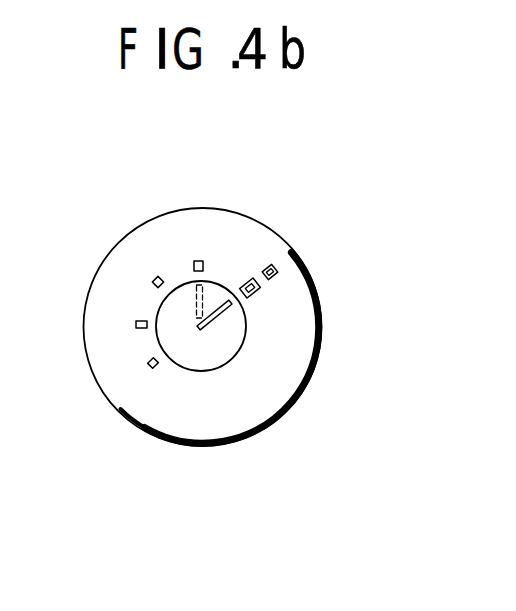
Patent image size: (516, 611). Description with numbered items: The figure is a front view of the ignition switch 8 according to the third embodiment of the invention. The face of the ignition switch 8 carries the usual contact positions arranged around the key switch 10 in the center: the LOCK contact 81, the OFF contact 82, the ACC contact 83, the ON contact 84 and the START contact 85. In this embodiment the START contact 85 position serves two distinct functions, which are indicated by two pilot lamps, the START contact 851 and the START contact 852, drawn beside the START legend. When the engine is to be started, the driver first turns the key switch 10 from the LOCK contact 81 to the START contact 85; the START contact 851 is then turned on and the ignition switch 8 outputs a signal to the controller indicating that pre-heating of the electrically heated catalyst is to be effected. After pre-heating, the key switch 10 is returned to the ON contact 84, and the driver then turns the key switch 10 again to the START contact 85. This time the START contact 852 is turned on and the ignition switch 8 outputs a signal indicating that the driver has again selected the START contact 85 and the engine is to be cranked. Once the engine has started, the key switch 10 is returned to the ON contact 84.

The ignition switch 8 is at (208, 447).
The key switch 10 is at (214, 317).
The LOCK contact 81 is at (149, 366).
The OFF contact 82 is at (136, 323).
The ACC contact 83 is at (160, 276).
The ON contact 84 is at (204, 262).
The START contact 85 is at (278, 263).
The START contact pilot lamp 851 is at (277, 272).
The START contact pilot lamp 852 is at (264, 291).